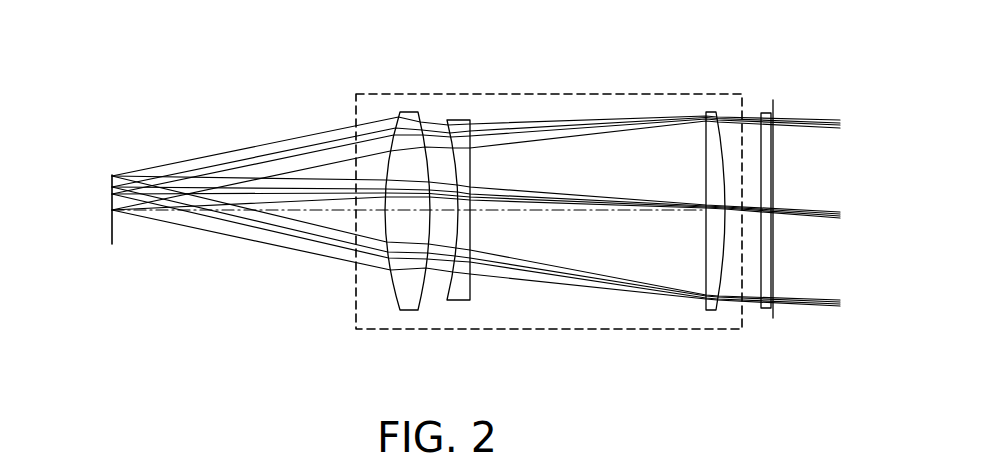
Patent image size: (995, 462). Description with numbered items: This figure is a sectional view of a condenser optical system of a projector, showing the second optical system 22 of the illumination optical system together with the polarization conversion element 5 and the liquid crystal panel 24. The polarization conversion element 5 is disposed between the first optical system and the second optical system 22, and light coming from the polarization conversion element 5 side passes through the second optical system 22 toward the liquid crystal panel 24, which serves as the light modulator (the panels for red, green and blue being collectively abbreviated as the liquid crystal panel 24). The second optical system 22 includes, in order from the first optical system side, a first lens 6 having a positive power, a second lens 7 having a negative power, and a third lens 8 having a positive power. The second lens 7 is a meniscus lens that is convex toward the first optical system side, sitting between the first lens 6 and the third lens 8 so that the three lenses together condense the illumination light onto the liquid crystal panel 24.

The liquid crystal panel 24 is at (112, 242).
The second optical system 22 is at (465, 93).
The third lens 8 is at (408, 310).
The second lens 7 is at (450, 301).
The first lens 6 is at (712, 311).
The polarization conversion element 5 is at (768, 145).